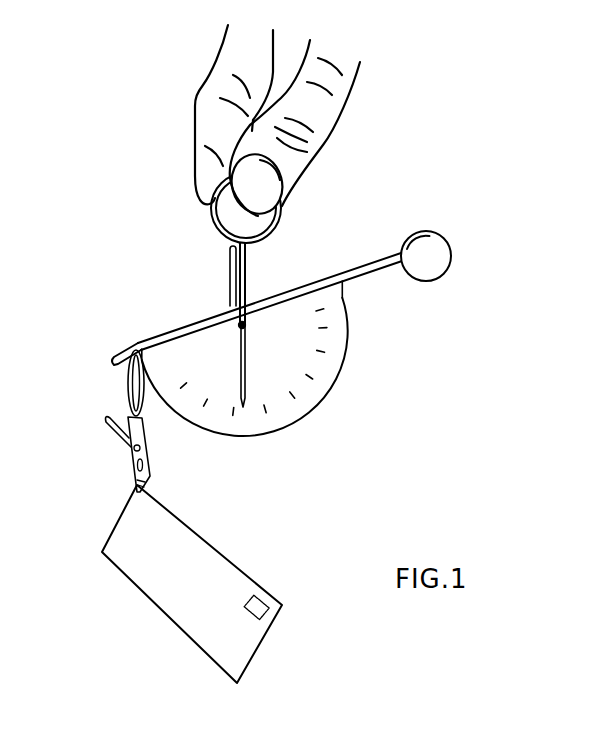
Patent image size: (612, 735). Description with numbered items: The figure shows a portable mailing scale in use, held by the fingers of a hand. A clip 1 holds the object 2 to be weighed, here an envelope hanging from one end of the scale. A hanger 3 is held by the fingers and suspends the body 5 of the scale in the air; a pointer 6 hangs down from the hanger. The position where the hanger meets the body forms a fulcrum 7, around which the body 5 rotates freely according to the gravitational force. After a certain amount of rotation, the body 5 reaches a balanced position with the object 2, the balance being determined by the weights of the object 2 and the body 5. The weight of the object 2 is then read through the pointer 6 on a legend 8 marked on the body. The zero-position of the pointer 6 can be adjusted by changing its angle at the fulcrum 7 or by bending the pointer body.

The clip 1 is at (118, 457).
The object 2 is at (145, 604).
The hanger 3 is at (223, 284).
The body 5 is at (346, 346).
The pointer 6 is at (237, 353).
The fulcrum 7 is at (259, 322).
The legend 8 is at (329, 298).